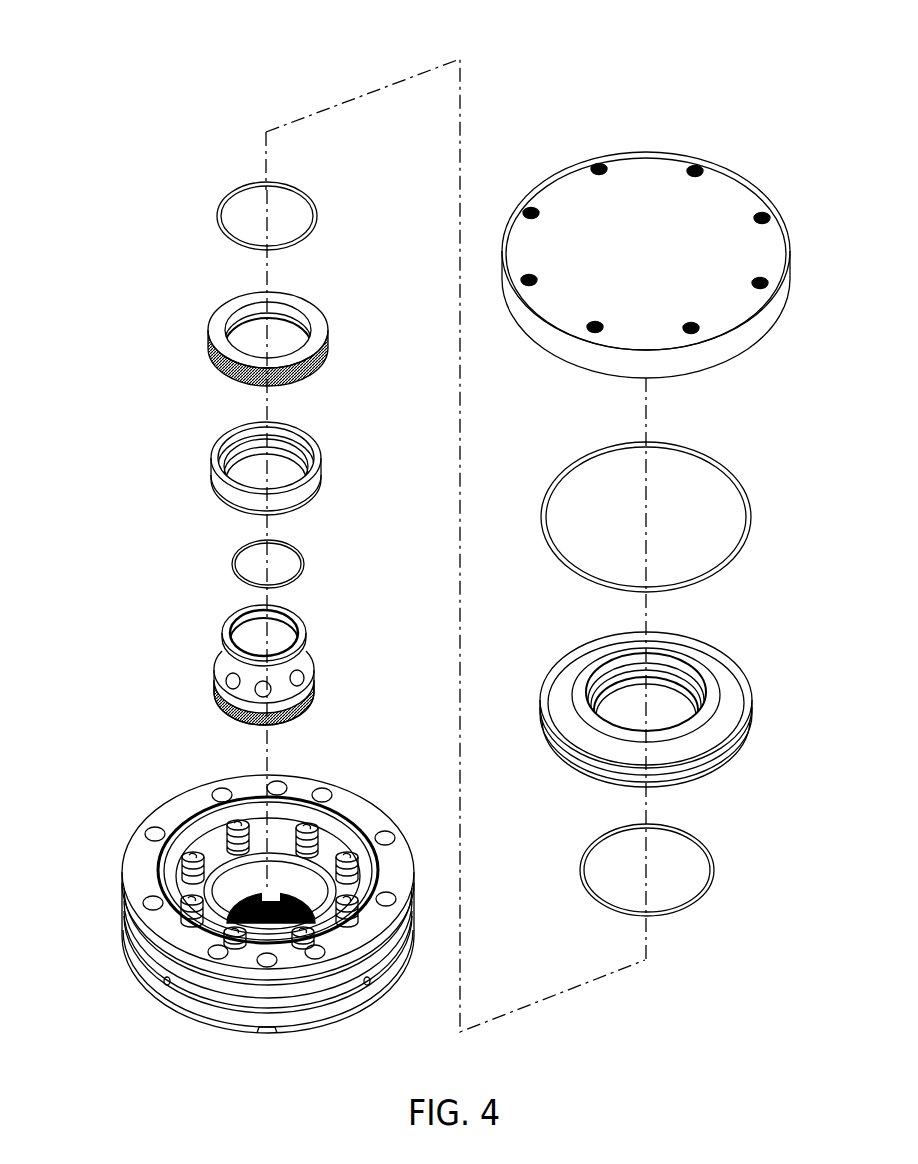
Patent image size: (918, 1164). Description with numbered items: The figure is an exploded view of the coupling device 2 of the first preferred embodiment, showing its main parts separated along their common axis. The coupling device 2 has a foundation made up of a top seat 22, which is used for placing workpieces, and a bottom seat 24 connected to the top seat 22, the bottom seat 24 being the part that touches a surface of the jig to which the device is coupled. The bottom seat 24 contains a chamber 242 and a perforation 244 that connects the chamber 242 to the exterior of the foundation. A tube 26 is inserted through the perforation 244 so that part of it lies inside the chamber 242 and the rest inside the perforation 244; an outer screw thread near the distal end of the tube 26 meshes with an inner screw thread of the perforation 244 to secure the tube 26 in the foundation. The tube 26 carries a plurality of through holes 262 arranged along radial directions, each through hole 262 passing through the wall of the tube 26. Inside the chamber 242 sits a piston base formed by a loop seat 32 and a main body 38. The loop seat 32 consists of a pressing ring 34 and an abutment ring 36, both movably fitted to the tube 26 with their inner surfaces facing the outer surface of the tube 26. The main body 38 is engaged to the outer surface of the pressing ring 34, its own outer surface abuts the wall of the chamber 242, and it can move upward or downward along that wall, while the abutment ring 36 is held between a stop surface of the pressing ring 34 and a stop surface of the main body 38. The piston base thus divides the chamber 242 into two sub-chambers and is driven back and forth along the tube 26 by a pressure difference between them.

The coupling device 2 is at (793, 29).
The top seat 22 is at (653, 187).
The bottom seat 24 is at (243, 874).
The chamber 242 is at (208, 830).
The perforation 244 is at (252, 917).
The tube 26 is at (315, 665).
The through hole 262 is at (310, 678).
The loop seat 32 is at (103, 304).
The pressing ring 34 is at (217, 335).
The abutment ring 36 is at (215, 443).
The main body 38 is at (724, 676).